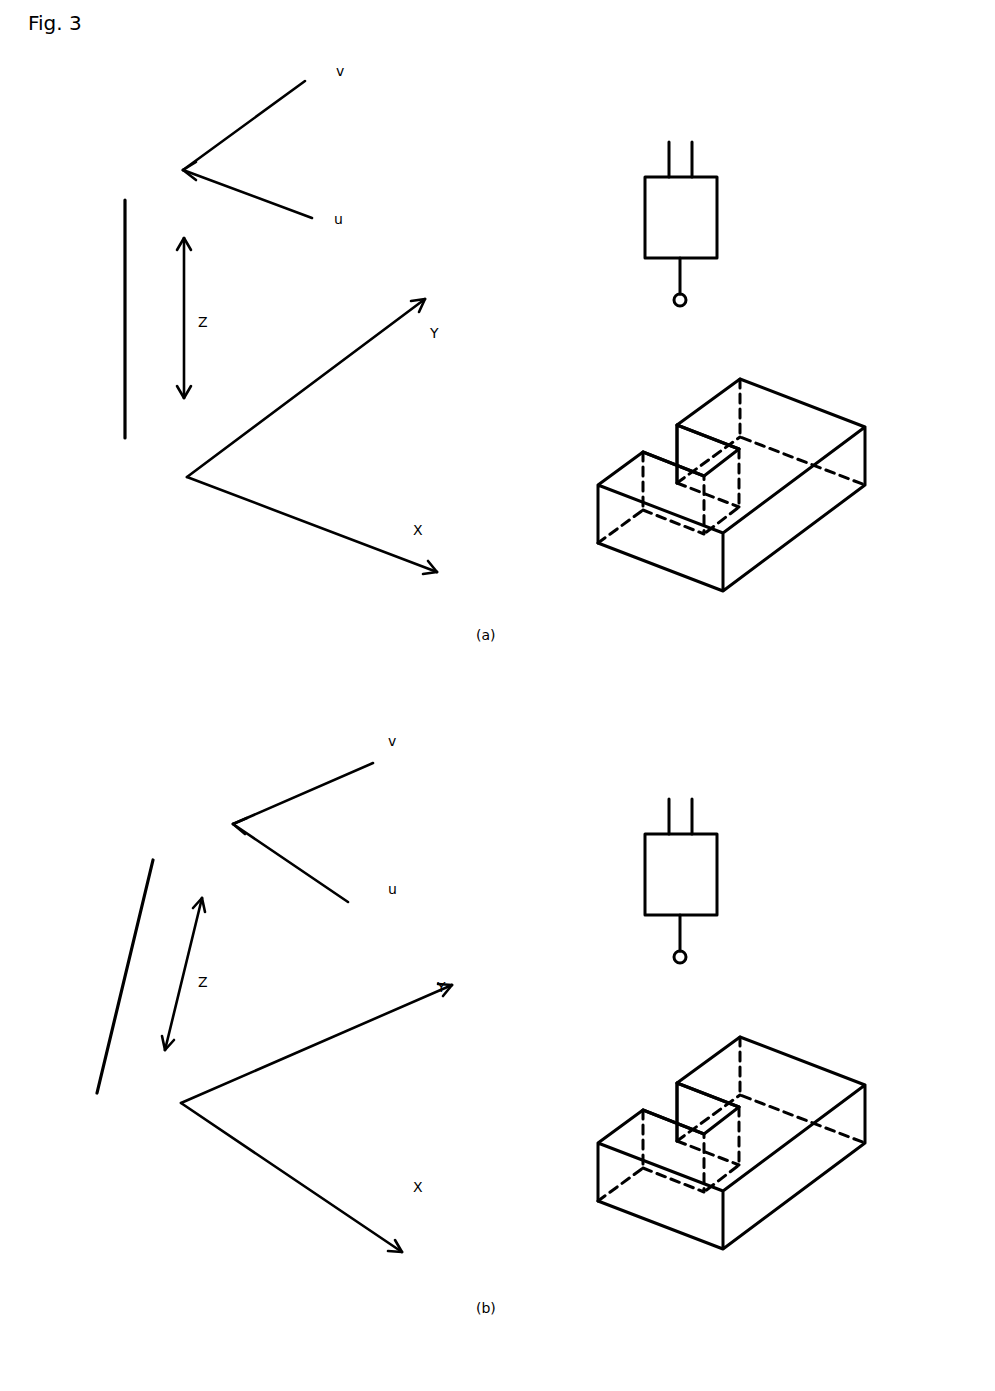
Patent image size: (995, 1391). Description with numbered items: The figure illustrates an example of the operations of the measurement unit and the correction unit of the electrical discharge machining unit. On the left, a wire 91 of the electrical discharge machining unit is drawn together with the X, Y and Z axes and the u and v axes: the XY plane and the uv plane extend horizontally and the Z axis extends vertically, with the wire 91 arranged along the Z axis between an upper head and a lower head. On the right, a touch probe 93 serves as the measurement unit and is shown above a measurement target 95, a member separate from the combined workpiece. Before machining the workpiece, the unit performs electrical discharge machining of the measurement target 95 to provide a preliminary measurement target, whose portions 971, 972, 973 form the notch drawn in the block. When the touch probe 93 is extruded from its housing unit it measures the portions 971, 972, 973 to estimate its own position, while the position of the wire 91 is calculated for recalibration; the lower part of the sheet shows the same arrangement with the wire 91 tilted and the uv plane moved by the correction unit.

The wire 91 is at (123, 258).
The touch probe 93 is at (718, 215).
The measurement target 95 is at (807, 403).
The preliminary measurement target portion 971 is at (658, 1115).
The preliminary measurement target portion 972 is at (703, 1101).
The preliminary measurement target portion 973 is at (678, 1099).